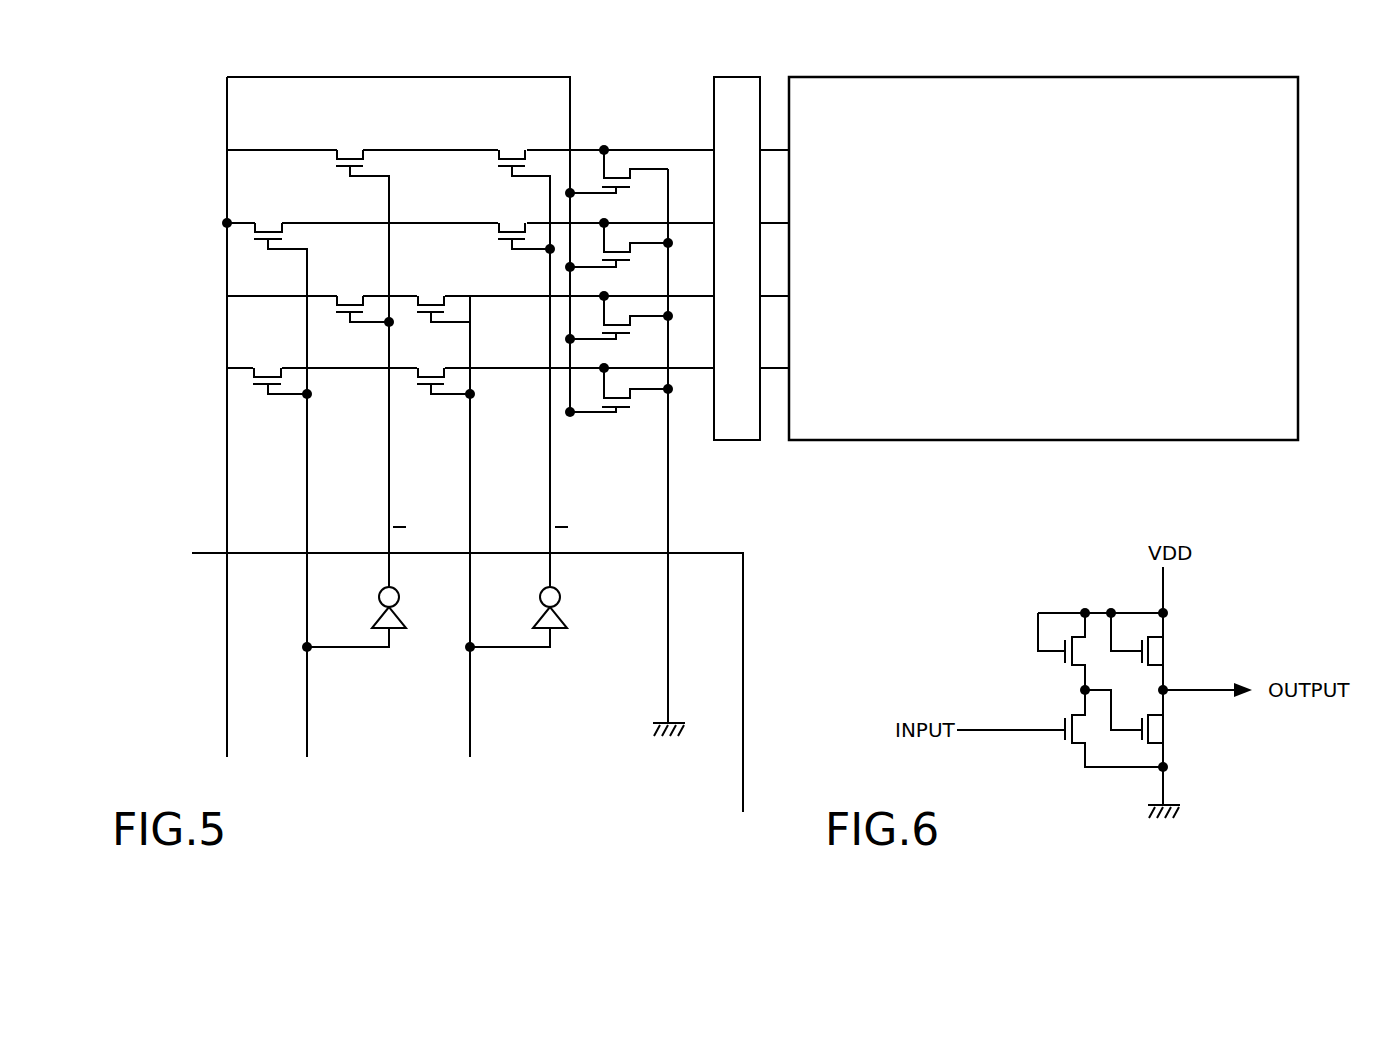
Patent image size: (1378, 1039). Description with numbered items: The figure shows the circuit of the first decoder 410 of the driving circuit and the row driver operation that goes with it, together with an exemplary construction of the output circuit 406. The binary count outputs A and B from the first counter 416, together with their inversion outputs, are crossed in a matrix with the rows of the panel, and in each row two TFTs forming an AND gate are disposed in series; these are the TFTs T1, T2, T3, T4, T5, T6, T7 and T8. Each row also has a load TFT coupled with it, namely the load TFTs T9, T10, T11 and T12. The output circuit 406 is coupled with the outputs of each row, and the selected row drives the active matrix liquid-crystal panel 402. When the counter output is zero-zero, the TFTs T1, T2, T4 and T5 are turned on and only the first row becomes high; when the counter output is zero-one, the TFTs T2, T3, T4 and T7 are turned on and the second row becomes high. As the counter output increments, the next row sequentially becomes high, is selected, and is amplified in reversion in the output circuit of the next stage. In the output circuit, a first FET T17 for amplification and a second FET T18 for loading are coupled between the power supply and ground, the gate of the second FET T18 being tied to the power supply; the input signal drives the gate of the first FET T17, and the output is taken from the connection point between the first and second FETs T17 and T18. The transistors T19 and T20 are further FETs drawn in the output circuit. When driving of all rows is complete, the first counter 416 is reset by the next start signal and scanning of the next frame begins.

In FIG. 5, the first decoder 410 is at (471, 391).
In FIG. 5, the output circuit 406 is at (740, 76).
In FIG. 5, the active matrix liquid-crystal panel 402 is at (975, 76).
In FIG. 5, the first counter 416 is at (743, 622).
In FIG. 5, the TFT T1 is at (349, 149).
In FIG. 5, the TFT T2 is at (511, 149).
In FIG. 5, the TFT T3 is at (267, 222).
In FIG. 5, the TFT T4 is at (511, 222).
In FIG. 5, the TFT T5 is at (349, 295).
In FIG. 5, the TFT T6 is at (430, 295).
In FIG. 5, the TFT T7 is at (267, 367).
In FIG. 5, the TFT T8 is at (430, 367).
In FIG. 5, the load TFT T9 is at (612, 154).
In FIG. 5, the load TFT T10 is at (632, 253).
In FIG. 5, the load TFT T11 is at (632, 326).
In FIG. 5, the load TFT T12 is at (632, 399).
In FIG. 6, the first FET T17 is at (1153, 652).
In FIG. 6, the second FET T18 is at (1153, 730).
In FIG. 6, the transistor T19 is at (1079, 632).
In FIG. 6, the transistor T20 is at (1082, 749).